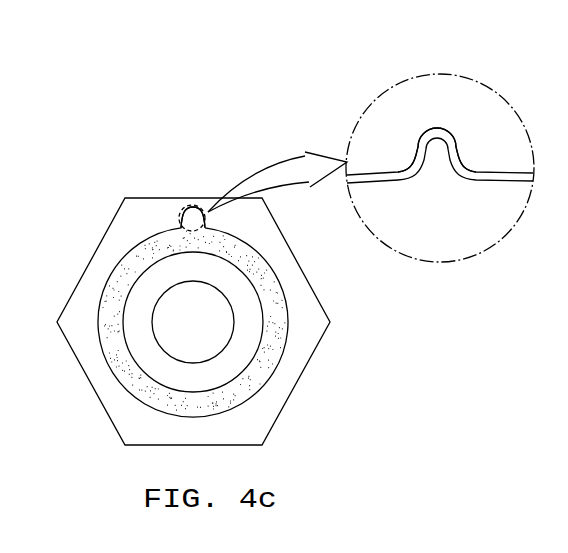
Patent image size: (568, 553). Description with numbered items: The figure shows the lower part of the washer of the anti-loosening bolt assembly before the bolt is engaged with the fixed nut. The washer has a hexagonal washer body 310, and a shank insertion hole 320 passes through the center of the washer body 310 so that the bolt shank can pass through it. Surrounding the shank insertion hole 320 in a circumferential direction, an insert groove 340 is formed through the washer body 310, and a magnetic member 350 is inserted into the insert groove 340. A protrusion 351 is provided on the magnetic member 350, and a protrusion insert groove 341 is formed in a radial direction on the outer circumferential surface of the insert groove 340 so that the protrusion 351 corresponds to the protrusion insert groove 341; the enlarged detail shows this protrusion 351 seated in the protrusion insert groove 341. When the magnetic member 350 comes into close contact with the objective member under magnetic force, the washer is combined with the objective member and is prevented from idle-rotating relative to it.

The washer body 310 is at (285, 383).
The shank insertion hole 320 is at (227, 298).
The insert groove 340 is at (120, 257).
The protrusion insert groove 341 is at (188, 218).
The magnetic member 350 is at (112, 290).
The protrusion 351 is at (200, 220).